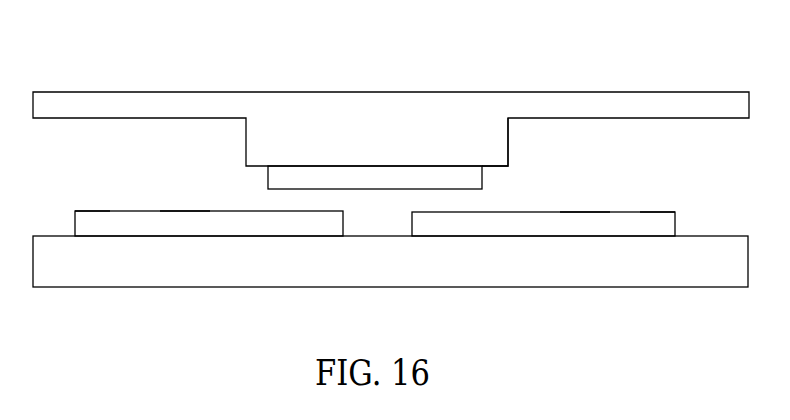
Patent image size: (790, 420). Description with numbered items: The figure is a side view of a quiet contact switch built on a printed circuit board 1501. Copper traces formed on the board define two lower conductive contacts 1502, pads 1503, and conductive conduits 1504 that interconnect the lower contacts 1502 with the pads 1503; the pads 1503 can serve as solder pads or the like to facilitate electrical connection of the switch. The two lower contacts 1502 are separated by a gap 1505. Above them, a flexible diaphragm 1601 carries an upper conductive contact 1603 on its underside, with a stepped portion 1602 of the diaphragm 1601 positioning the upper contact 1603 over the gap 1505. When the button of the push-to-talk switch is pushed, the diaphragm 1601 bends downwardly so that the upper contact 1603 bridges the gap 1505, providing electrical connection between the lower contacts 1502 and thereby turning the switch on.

The printed circuit board 1501 is at (725, 236).
The lower conductive contacts 1502 is at (327, 212).
The pads 1503 is at (92, 211).
The conductive conduits 1504 is at (183, 211).
The gap 1505 is at (360, 202).
The flexible diaphragm 1601 is at (100, 92).
The lid step portion 1602 is at (508, 142).
The upper conductive contact 1603 is at (395, 189).